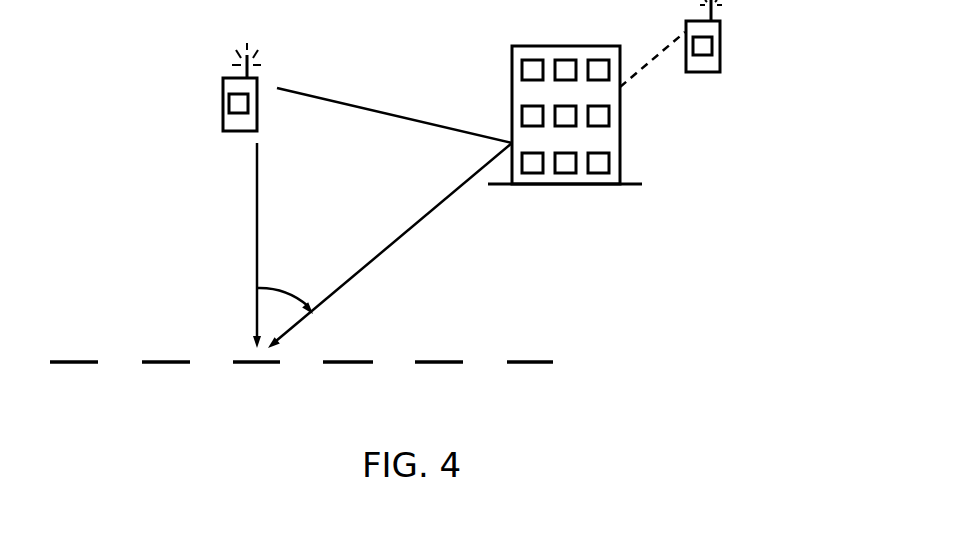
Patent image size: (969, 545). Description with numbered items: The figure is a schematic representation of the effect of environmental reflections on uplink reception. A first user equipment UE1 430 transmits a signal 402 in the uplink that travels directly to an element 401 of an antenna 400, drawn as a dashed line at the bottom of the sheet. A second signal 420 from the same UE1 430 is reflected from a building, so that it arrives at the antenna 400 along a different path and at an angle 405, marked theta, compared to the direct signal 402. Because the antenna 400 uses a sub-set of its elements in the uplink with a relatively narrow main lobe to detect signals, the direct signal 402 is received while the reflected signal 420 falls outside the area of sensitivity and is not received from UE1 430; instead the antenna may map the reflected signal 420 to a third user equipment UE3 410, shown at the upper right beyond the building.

The antenna 400 is at (567, 362).
The element of antenna 401 is at (255, 377).
The signal 402 is at (253, 202).
The angle 405 is at (283, 282).
The UE3 410 is at (703, 72).
The signal 420 is at (405, 235).
The first user equipment UE1 430 is at (223, 92).